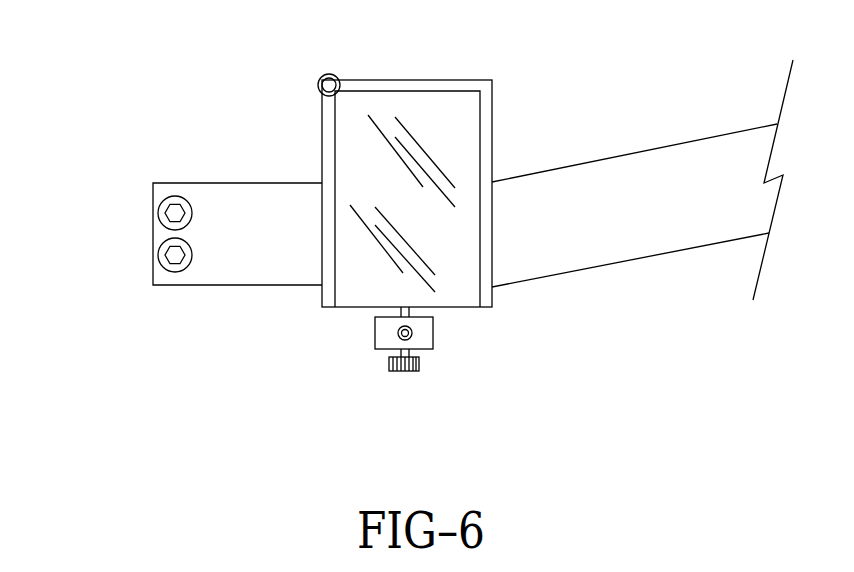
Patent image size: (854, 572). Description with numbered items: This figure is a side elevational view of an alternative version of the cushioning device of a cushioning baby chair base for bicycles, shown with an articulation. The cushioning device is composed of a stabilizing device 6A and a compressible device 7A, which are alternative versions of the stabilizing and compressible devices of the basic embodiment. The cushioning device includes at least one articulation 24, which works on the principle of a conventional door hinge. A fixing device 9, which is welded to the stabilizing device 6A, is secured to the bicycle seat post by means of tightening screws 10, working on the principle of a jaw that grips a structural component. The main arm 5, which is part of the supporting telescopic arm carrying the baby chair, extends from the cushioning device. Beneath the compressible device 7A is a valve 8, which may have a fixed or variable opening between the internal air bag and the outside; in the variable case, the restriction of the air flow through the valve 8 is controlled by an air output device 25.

The main arm 5 is at (582, 252).
The stabilizing device 6A is at (412, 83).
The compressible device 7A is at (448, 130).
The valve 8 is at (430, 345).
The fixing device 9 is at (173, 282).
The tightening screws 10 is at (170, 212).
The articulation 24 is at (322, 78).
The air output device 25 is at (417, 372).